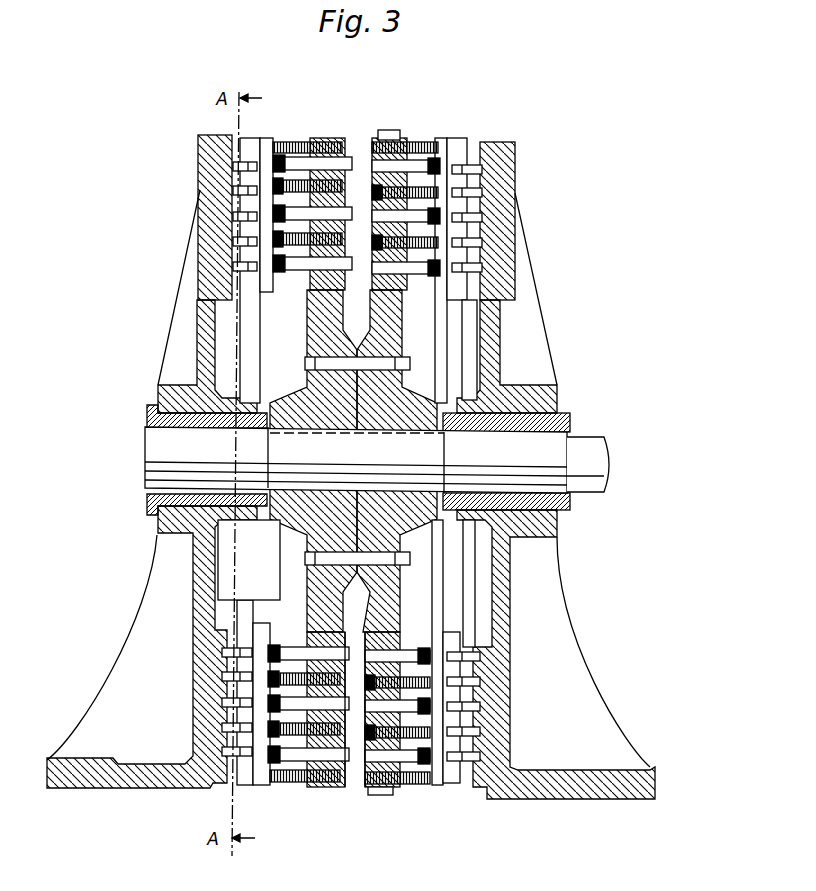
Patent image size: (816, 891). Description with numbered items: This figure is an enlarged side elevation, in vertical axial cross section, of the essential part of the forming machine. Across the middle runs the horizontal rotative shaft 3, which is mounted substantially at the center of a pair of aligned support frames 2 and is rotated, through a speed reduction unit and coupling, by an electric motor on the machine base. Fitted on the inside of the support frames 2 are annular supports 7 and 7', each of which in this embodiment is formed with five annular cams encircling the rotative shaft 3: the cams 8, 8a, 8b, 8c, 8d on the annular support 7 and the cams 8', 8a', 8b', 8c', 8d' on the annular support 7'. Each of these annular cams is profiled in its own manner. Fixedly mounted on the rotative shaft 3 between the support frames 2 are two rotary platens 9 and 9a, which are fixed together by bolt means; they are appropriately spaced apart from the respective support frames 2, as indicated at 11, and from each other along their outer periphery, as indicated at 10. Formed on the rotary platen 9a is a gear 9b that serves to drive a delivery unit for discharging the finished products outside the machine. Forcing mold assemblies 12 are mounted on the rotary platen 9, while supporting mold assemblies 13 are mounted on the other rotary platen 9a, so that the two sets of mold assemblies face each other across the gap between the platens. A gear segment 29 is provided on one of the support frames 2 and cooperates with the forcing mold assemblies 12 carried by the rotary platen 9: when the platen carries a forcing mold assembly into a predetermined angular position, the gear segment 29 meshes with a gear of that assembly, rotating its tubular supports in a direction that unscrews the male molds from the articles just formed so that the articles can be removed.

The support frame 2 is at (202, 333).
The rotative shaft 3 is at (157, 469).
The annular support 7 is at (188, 217).
The annular support 7' is at (527, 221).
The annular cam 8 is at (202, 642).
The annular cam 8a is at (198, 666).
The annular cam 8b is at (194, 692).
The annular cam 8c is at (195, 716).
The annular cam 8d is at (189, 741).
The annular cam 8' is at (498, 650).
The annular cam 8a' is at (503, 674).
The annular cam 8b' is at (503, 699).
The annular cam 8c' is at (502, 724).
The annular cam 8d' is at (504, 749).
The rotary platen 9 is at (330, 138).
The rotary platen 9a is at (367, 793).
The gear 9b is at (395, 130).
The space between rotary platens 10 is at (352, 782).
The space between platen and support frame 11 is at (297, 785).
The forcing mold assembly 12 is at (253, 140).
The supporting mold assembly 13 is at (458, 140).
The gear segment 29 is at (273, 606).